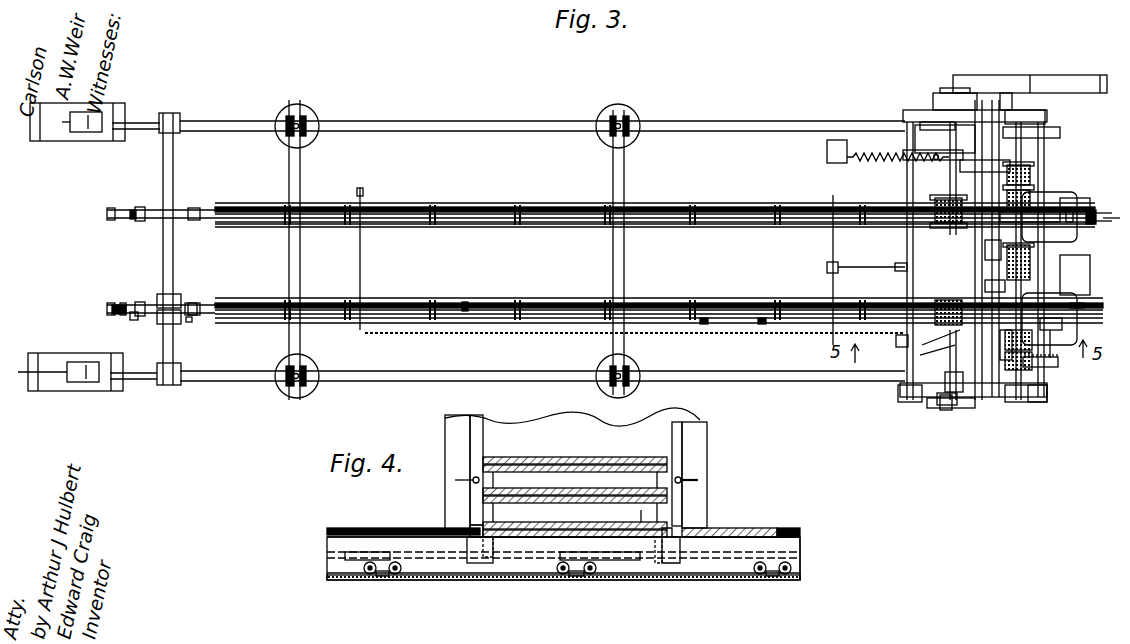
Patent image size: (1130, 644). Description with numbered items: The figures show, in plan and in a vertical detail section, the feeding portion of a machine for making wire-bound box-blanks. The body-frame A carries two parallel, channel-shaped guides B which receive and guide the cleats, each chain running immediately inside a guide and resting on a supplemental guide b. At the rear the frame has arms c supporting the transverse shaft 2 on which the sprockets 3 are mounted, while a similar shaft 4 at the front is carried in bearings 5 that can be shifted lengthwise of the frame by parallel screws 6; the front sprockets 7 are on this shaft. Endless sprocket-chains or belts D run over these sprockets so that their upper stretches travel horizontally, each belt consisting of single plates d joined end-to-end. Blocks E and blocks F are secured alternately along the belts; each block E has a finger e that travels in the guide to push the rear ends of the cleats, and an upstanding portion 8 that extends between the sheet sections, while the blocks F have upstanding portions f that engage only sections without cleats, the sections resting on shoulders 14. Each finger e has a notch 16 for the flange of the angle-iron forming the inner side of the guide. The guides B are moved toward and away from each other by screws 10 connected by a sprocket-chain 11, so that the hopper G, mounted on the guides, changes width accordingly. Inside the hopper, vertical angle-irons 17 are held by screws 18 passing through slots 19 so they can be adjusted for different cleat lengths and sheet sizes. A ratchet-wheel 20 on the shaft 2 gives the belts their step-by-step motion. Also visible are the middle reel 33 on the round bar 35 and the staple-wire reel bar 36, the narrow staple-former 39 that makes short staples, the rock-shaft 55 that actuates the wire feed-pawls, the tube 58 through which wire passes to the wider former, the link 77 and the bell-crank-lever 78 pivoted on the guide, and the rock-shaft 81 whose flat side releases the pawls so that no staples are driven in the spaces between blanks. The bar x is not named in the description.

In FIG. 3, the shaft 2 is at (1109, 293).
In FIG. 3, the sprockets 3 is at (1116, 220).
In FIG. 3, the shaft 4 is at (172, 342).
In FIG. 3, the bearings 5 is at (168, 386).
In FIG. 3, the parallel screws 6 is at (228, 122).
In FIG. 3, the sprockets 7 is at (120, 314).
In FIG. 3, the upstanding portion 8 is at (1090, 215).
In FIG. 4, the upstanding portion 8 is at (470, 530).
In FIG. 3, the screws 10 is at (364, 275).
In FIG. 3, the sprocket-chain 11 is at (460, 333).
In FIG. 3, the shoulders 14 is at (195, 303).
In FIG. 3, the notch 16 is at (135, 318).
In FIG. 3, the angle-irons 17 is at (708, 325).
In FIG. 4, the angle-irons 17 is at (460, 431).
In FIG. 4, the screws 18 is at (682, 470).
In FIG. 4, the slots 19 is at (695, 488).
In FIG. 3, the ratchet-wheel 20 is at (1048, 368).
In FIG. 3, the middle reel 33 is at (965, 380).
In FIG. 3, the shaft 35 is at (952, 152).
In FIG. 3, the shaft 36 is at (1022, 158).
In FIG. 3, the narrow staple-former 39 is at (1030, 262).
In FIG. 3, the rock-shaft 55 is at (990, 285).
In FIG. 3, the tube 58 is at (1070, 330).
In FIG. 3, the link 77 is at (930, 375).
In FIG. 3, the bell-crank-lever 78 is at (898, 345).
In FIG. 3, the rock-shaft 81 is at (1060, 132).
In FIG. 3, the body-frame A is at (722, 128).
In FIG. 3, the guides B is at (480, 206).
In FIG. 4, the guides B is at (800, 532).
In FIG. 3, the sprocket-chains or belts D is at (536, 230).
In FIG. 4, the sprocket-chains or belts D is at (527, 563).
In FIG. 4, the blocks E is at (480, 555).
In FIG. 4, the blocks F is at (686, 548).
In FIG. 4, the hopper G is at (572, 432).
In FIG. 3, the supplemental guides b is at (752, 224).
In FIG. 4, the supplemental guides b is at (798, 570).
In FIG. 3, the arms c is at (1030, 400).
In FIG. 4, the plates d is at (428, 568).
In FIG. 3, the fingers e is at (136, 210).
In FIG. 3, the upstanding portions f is at (126, 304).
In FIG. 4, the upstanding portions f is at (664, 548).
In FIG. 4, the bar x is at (641, 510).